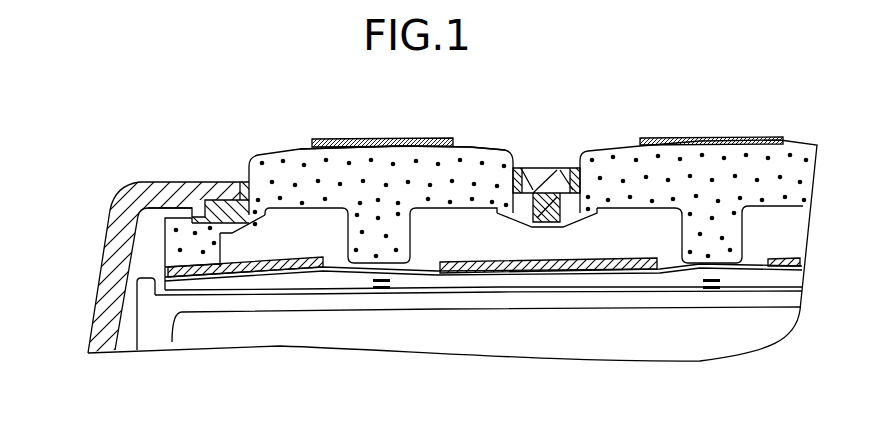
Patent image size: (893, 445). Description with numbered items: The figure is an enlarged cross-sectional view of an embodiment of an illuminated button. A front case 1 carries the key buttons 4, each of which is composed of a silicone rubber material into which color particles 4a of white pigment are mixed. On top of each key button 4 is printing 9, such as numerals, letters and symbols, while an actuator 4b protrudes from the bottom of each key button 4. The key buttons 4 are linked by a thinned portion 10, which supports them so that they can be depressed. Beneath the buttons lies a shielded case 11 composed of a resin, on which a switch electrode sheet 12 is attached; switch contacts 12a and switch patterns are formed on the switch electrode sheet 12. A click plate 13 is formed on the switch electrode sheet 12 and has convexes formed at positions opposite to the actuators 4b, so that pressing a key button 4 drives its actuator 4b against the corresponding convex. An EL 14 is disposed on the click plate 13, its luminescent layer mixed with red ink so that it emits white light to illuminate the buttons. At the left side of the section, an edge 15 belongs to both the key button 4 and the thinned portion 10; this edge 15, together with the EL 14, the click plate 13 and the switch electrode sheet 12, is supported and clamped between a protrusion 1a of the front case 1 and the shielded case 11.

The front case 1 is at (140, 186).
The protrusion 1a is at (188, 207).
The thinned portion 10 is at (242, 212).
The edge 15 is at (168, 250).
The key button 4 is at (282, 157).
The color particles 4a is at (467, 162).
The actuator 4b is at (412, 238).
The printing 9 is at (360, 138).
The EL 14 is at (236, 277).
The click plate 13 is at (322, 272).
The switch electrode sheet 12 is at (412, 284).
The switch contacts 12a is at (380, 290).
The shielded case 11 is at (497, 303).